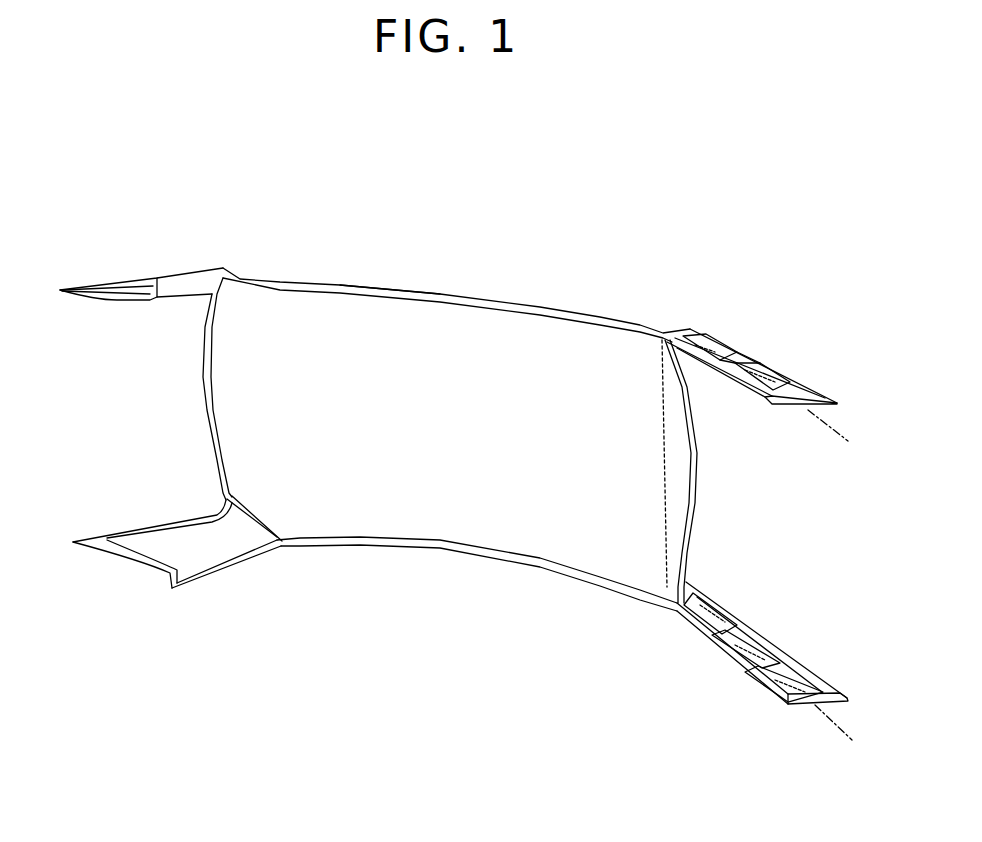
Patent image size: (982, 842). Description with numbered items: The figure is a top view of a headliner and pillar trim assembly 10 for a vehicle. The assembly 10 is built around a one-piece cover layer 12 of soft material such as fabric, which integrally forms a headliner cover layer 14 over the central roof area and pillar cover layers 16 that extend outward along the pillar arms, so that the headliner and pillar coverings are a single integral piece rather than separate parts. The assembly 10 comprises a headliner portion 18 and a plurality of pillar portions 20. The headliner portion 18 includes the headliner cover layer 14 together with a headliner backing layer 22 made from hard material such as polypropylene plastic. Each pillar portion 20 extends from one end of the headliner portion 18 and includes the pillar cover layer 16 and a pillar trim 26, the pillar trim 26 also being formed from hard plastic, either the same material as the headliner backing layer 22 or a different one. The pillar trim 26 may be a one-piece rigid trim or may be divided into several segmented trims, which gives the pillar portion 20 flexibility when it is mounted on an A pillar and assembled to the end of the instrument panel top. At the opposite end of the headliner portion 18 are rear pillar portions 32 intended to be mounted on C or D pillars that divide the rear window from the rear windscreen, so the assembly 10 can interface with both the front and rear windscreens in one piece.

The headliner and pillar trim assembly 10 is at (462, 464).
The one-piece cover layer 12 is at (437, 280).
The headliner cover layer 14 is at (352, 284).
The pillar cover layer 16 is at (752, 353).
The headliner portion 18 is at (467, 553).
The pillar portion 20 is at (806, 378).
The headliner backing layer 22 is at (407, 515).
The pillar trim 26 is at (702, 344).
The rear pillar portion 32 is at (122, 280).